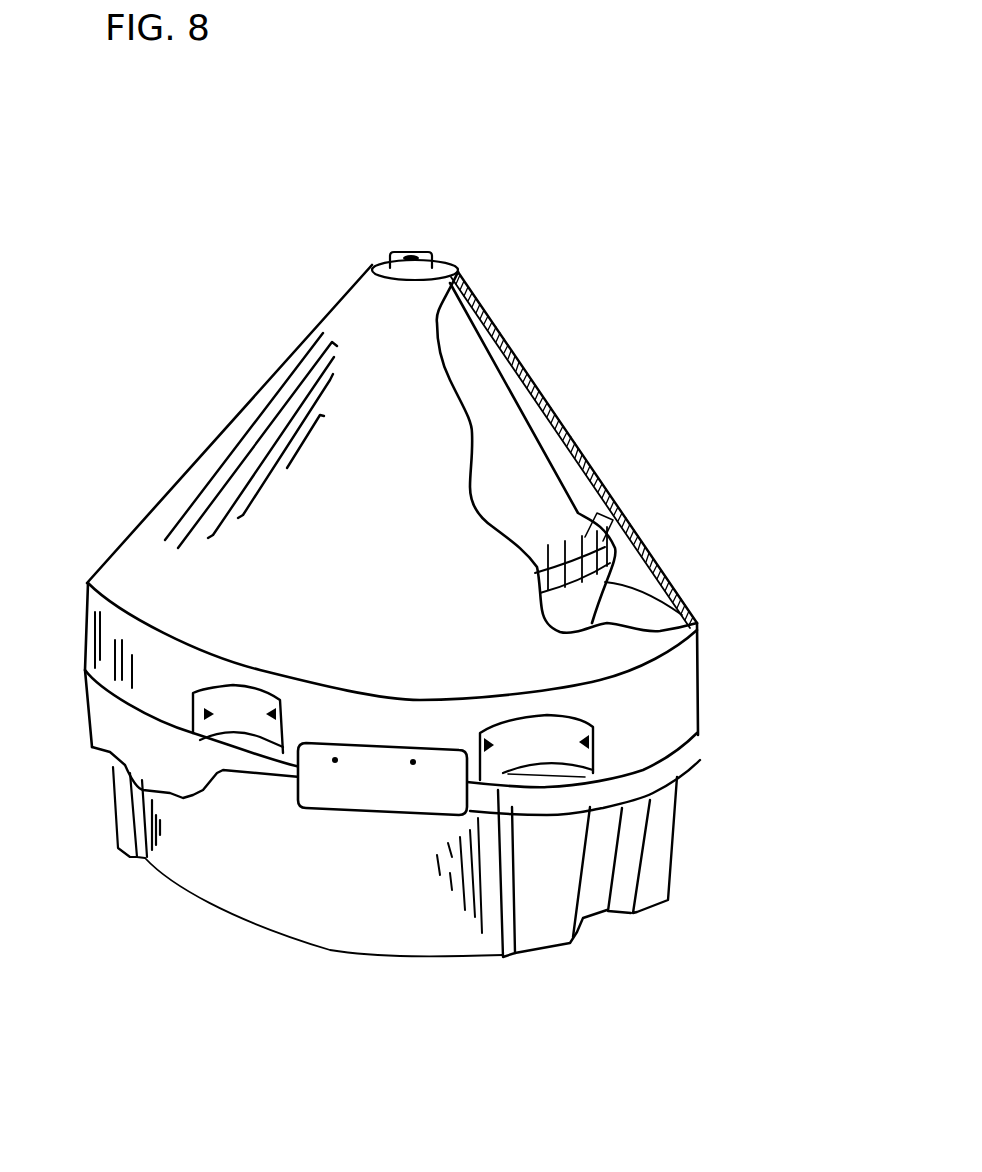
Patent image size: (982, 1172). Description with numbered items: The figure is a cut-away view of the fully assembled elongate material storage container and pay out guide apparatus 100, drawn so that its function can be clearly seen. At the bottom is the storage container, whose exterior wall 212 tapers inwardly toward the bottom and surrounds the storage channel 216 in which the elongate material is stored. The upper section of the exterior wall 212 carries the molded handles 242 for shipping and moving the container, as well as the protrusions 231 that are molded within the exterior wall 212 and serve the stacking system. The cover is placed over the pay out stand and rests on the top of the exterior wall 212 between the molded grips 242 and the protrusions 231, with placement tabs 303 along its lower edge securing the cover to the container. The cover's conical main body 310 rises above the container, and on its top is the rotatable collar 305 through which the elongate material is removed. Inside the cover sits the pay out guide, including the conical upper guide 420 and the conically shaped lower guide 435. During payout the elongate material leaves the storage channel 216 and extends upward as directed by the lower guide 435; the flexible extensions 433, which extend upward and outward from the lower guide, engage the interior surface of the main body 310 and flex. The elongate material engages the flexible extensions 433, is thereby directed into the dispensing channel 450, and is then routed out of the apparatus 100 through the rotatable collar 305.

The elongate material storage container and pay out guide apparatus 100 is at (204, 300).
The main body 310 is at (451, 518).
The rotatable collar 305 is at (432, 255).
The upper guide 420 is at (458, 355).
The dispensing channel 450 is at (537, 420).
The flexible extensions 433 is at (612, 500).
The storage channel 216 is at (642, 598).
The main body of lower guide/locking assembly 435 is at (580, 597).
The exterior wall 212 is at (290, 887).
The handles 242 is at (97, 753).
The protrusions 231 is at (652, 903).
The placement tabs 303 is at (407, 807).